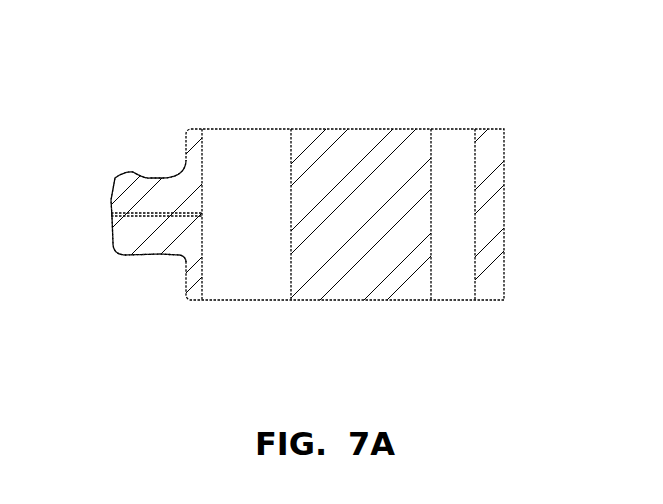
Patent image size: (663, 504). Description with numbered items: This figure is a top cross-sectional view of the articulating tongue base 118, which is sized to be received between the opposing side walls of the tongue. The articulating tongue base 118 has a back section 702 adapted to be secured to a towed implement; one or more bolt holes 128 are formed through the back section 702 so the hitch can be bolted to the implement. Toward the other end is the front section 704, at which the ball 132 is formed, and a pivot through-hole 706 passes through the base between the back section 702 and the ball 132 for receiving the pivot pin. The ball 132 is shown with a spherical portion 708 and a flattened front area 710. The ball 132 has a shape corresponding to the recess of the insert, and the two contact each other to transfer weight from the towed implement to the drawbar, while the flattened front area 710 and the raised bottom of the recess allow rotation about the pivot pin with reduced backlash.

The articulating tongue base 118 is at (360, 93).
The bolt holes 128 is at (445, 150).
The ball 132 is at (143, 190).
The back section 702 is at (499, 116).
The front section 704 is at (118, 110).
The through-hole 706 is at (246, 214).
The spherical portion 708 is at (135, 262).
The flattened front area 710 is at (110, 221).